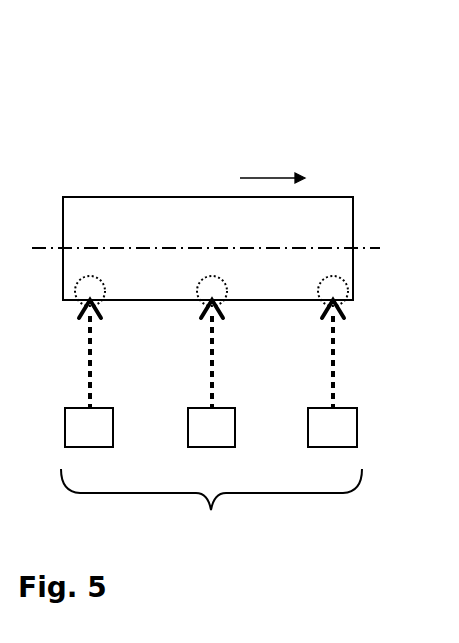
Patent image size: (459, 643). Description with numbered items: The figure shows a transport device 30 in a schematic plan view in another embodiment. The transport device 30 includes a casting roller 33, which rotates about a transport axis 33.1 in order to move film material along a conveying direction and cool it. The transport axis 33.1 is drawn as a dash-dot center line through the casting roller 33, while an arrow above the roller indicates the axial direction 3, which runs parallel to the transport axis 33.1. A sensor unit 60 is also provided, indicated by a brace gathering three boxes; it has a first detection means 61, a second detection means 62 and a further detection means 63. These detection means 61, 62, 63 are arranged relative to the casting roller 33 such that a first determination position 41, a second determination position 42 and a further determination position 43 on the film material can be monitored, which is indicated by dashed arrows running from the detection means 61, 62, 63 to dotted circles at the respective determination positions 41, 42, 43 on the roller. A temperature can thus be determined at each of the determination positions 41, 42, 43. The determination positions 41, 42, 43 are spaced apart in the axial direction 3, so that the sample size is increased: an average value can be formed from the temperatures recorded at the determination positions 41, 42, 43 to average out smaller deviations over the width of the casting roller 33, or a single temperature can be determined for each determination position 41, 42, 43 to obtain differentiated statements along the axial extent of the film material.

The transport device 30 is at (92, 100).
The casting roller 33 is at (165, 223).
The transport axis 33.1 is at (355, 248).
The axial direction 3 is at (273, 178).
The first determination position 41 is at (80, 278).
The second determination position 42 is at (202, 278).
The further determination position 43 is at (325, 278).
The first detection means 61 is at (73, 440).
The second detection means 62 is at (227, 440).
The further detection means 63 is at (317, 440).
The sensor unit 60 is at (211, 510).